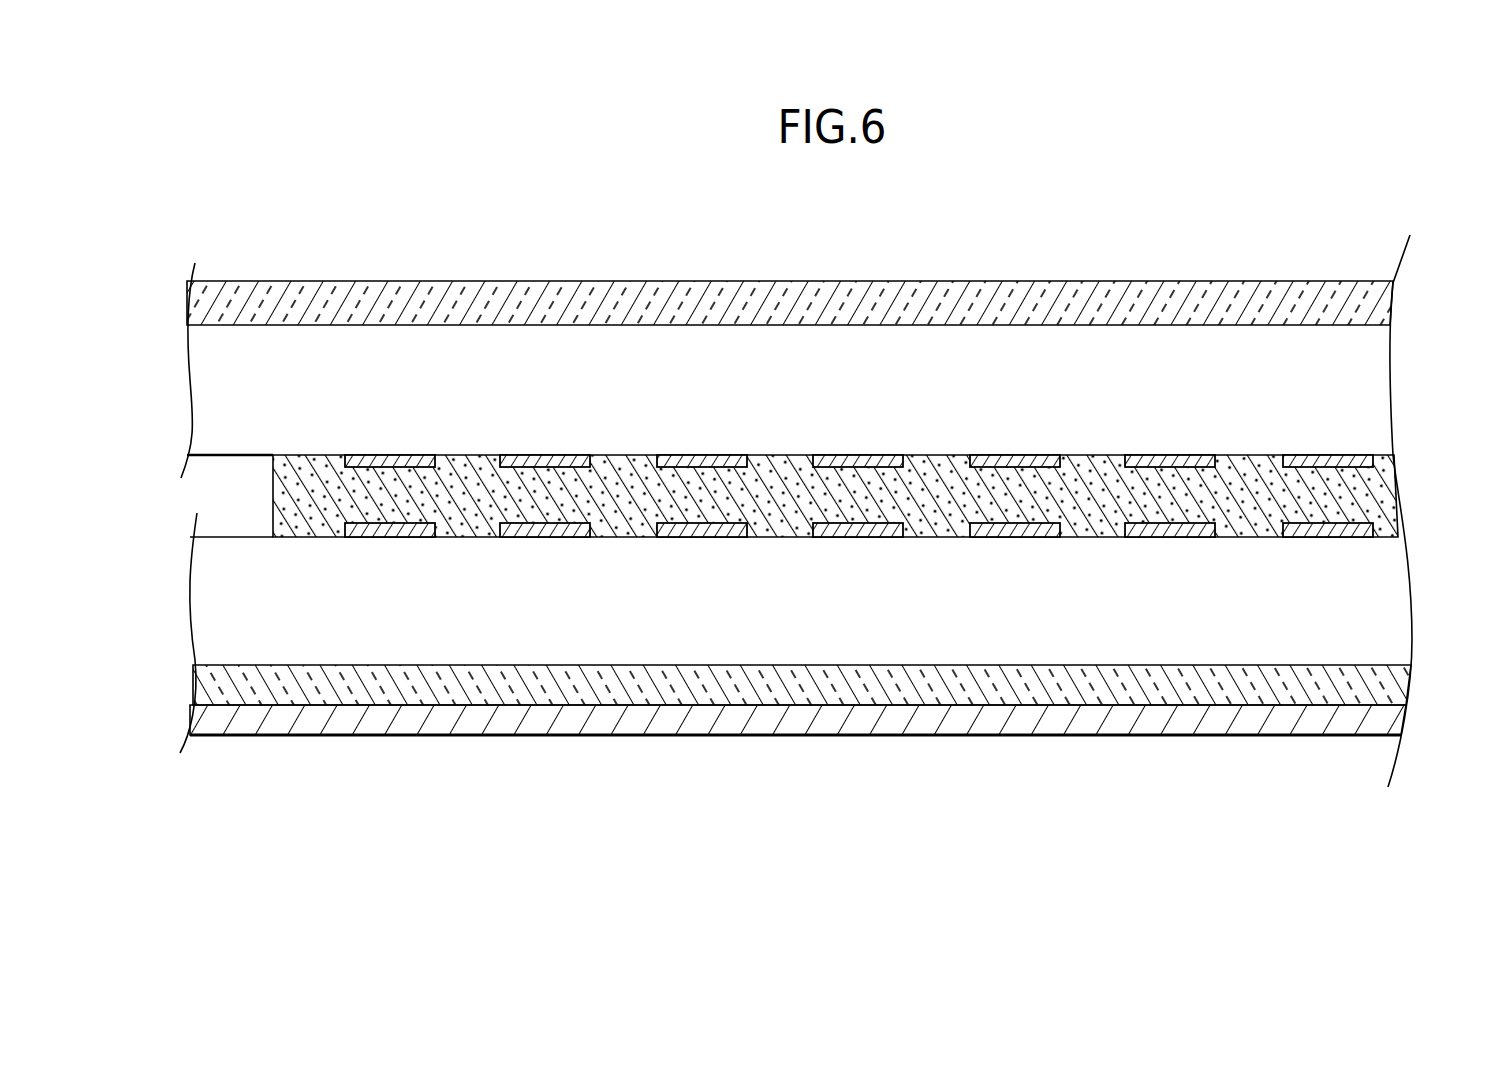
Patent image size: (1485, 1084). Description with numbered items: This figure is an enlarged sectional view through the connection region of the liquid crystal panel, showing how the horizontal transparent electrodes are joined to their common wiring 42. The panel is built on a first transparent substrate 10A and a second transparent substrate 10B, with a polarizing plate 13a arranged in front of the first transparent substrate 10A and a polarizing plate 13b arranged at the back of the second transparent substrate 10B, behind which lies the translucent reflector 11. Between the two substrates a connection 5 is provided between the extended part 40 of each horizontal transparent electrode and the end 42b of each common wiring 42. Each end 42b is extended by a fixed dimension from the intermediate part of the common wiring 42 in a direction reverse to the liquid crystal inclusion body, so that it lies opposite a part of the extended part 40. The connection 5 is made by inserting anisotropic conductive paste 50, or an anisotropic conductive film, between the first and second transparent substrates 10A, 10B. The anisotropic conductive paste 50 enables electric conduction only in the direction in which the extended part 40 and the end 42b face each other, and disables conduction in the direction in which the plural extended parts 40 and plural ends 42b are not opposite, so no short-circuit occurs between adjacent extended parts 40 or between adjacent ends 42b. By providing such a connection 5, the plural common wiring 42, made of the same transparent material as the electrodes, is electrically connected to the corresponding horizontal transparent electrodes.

The connection 5 is at (769, 495).
The first transparent substrate 10A is at (1385, 371).
The second transparent substrate 10B is at (1400, 582).
The translucent reflector 11 is at (1400, 720).
The polarizing plate 13a is at (1390, 302).
The polarizing plate 13b is at (1400, 686).
The extended part 40 is at (393, 539).
The common wiring 42 is at (859, 422).
The end 42b is at (400, 458).
The anisotropic conductive paste 50 is at (272, 518).